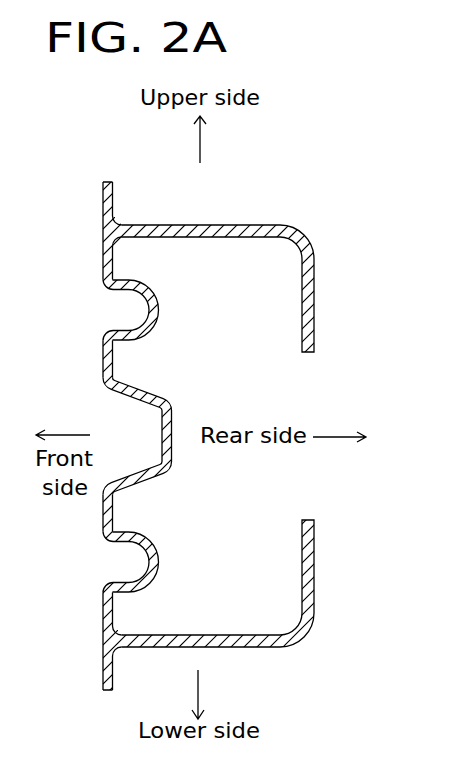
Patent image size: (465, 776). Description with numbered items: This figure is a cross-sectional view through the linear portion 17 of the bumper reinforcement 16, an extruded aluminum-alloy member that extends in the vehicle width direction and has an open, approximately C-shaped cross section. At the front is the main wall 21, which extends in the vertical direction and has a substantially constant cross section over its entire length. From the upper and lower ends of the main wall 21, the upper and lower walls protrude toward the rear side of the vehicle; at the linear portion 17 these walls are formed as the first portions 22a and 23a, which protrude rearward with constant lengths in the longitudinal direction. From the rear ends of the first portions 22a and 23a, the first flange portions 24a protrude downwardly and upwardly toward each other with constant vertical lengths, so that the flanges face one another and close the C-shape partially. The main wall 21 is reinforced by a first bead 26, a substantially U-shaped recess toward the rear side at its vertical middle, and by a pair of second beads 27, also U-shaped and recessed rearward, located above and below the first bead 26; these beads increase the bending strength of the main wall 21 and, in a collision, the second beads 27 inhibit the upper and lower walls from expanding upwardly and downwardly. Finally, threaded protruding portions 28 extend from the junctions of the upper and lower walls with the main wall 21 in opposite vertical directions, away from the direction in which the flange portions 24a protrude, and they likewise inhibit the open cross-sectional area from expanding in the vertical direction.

The bumper reinforcement 16 is at (265, 176).
The linear portion 17 is at (141, 225).
The main wall 21 is at (102, 263).
The first portion 22a is at (253, 226).
The first portion 23a is at (212, 648).
The first flange portion 24a is at (316, 314).
The first bead 26 is at (118, 397).
The second bead 27 is at (125, 291).
The threaded protruding portion 28 is at (104, 181).